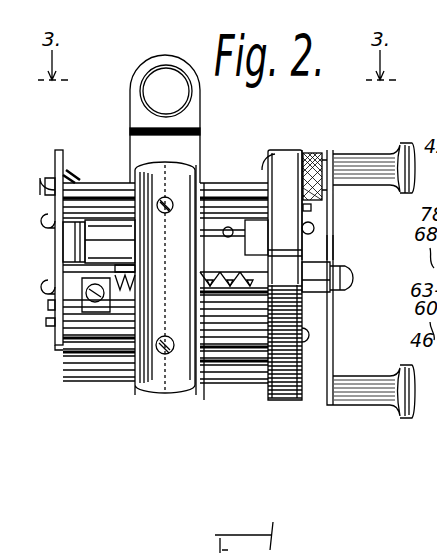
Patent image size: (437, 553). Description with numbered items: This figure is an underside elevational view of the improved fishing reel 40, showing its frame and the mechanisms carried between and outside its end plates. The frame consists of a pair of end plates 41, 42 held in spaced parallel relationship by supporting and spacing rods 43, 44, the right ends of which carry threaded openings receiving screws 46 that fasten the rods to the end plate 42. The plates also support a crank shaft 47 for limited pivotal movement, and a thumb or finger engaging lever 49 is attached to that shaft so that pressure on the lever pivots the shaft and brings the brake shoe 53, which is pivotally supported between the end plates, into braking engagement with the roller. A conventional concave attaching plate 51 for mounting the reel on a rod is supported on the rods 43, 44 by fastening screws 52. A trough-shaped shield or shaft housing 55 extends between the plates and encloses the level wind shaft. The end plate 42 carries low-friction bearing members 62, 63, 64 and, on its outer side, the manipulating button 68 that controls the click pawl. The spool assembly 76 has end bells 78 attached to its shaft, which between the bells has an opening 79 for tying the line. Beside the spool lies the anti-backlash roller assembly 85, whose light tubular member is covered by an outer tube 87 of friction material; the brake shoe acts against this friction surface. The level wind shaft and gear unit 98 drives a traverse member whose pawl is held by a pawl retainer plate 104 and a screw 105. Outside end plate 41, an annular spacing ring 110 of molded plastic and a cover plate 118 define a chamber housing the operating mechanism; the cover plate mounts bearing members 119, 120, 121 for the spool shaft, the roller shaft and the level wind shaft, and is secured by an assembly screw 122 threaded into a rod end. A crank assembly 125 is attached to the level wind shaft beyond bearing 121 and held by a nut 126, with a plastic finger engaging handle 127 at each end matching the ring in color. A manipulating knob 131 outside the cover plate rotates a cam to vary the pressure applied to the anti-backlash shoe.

The fishing reel 40 is at (168, 437).
The end plate 41 is at (268, 155).
The end plate 42 is at (61, 150).
The supporting and spacing rod 43 is at (212, 180).
The supporting and spacing rod 44 is at (250, 348).
The screws 46 is at (44, 400).
The crank shaft 47 is at (228, 192).
The thumb or finger engaging lever 49 is at (164, 63).
The concave attaching plate 51 is at (180, 380).
The fastening screws 52 is at (166, 197).
The brake shoe 53 is at (86, 356).
The shield or shaft housing 55 is at (110, 241).
The bearing member 62 is at (63, 258).
The bearing member 63 is at (55, 325).
The bearing member 64 is at (55, 305).
The manipulating button 68 is at (42, 178).
The spool assembly 76 is at (128, 237).
The end bells 78 is at (167, 204).
The opening 79 is at (229, 238).
The anti-backlash roller assembly 85 is at (225, 338).
The outer tube 87 is at (106, 378).
The level wind shaft and gear unit 98 is at (219, 265).
The pawl retainer plate 104 is at (88, 302).
The screw 105 is at (103, 302).
The annular spacing ring 110 is at (279, 150).
The cover plate 118 is at (311, 164).
The bearing member 119 is at (315, 226).
The bearing member 120 is at (309, 341).
The bearing member 121 is at (315, 262).
The assembly screw 122 is at (312, 207).
The crank assembly 125 is at (333, 240).
The nut 126 is at (355, 284).
The finger engaging handle 127 is at (396, 146).
The manipulating knob 131 is at (320, 158).